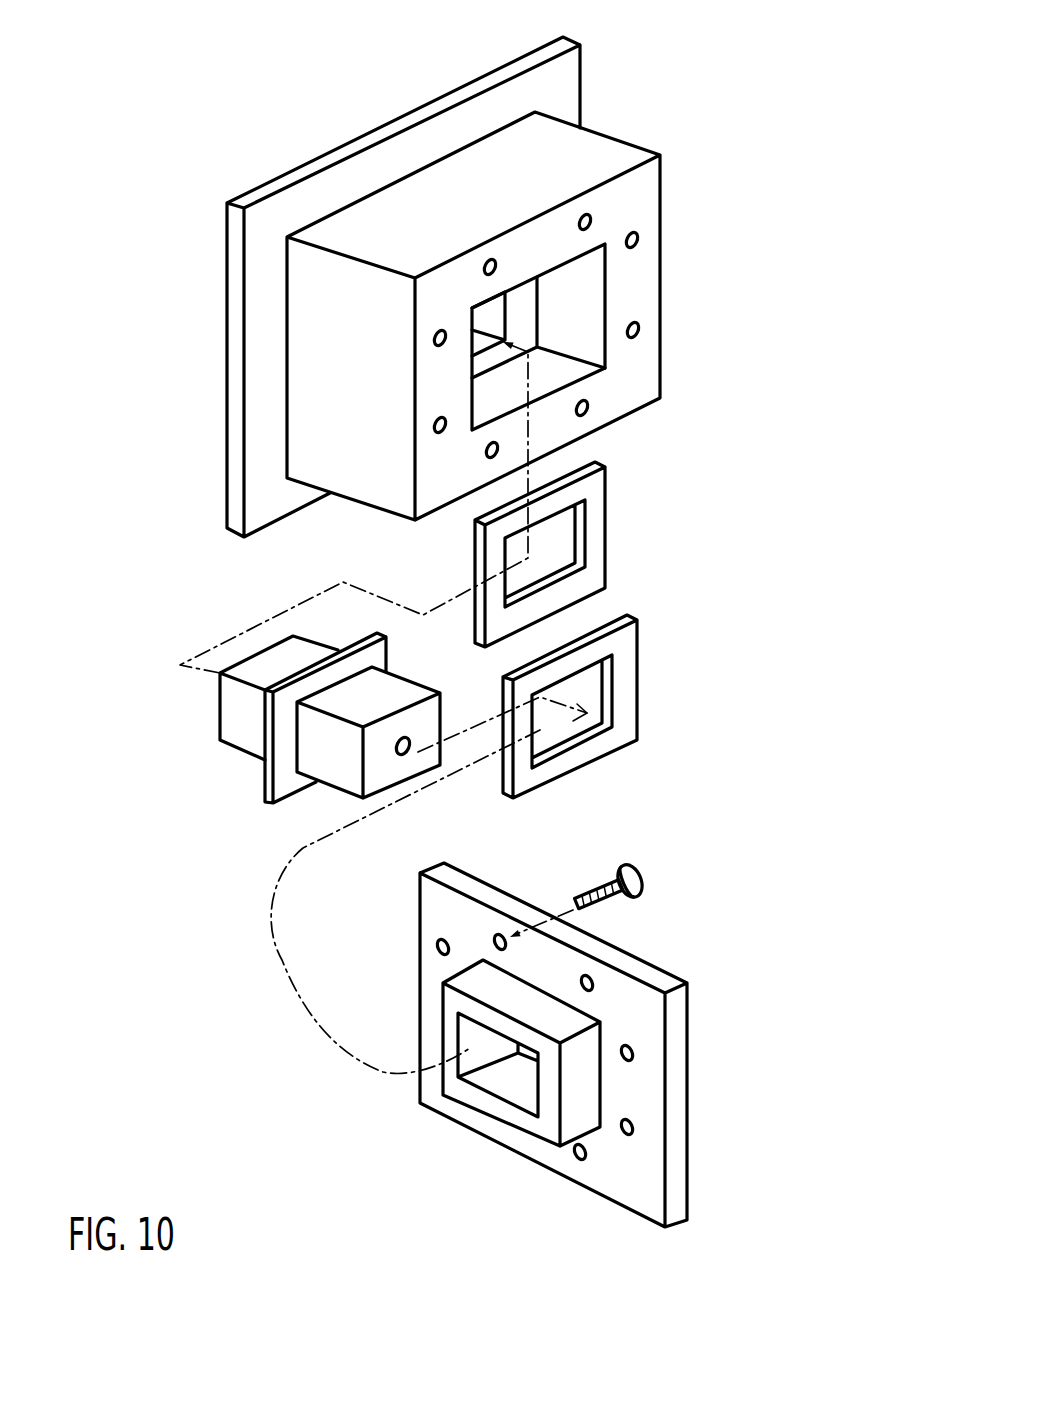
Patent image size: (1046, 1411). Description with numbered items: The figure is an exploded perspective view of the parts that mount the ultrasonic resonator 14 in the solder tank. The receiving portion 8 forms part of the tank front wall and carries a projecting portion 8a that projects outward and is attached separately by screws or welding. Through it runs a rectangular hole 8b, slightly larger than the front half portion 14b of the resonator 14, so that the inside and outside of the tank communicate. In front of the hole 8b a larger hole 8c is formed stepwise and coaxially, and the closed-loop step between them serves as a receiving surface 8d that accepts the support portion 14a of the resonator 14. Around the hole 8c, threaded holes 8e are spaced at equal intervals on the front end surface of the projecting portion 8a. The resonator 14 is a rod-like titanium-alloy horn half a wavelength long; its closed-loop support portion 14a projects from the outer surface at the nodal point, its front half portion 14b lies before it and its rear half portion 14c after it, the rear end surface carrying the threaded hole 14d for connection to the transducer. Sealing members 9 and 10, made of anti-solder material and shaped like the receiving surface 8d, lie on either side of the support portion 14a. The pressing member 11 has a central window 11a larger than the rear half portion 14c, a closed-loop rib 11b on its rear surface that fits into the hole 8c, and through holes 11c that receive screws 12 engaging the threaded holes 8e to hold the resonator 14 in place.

The receiving portion 8 is at (590, 79).
The projecting portion 8a is at (605, 137).
The hole 8b is at (503, 313).
The hole 8c is at (577, 370).
The receiving surface 8d is at (528, 327).
The threaded holes 8e is at (638, 235).
The sealing member 9 is at (600, 525).
The sealing member 10 is at (628, 643).
The pressing member 11 is at (662, 968).
The window 11a is at (527, 1056).
The rib 11b is at (418, 1103).
The through holes 11c is at (632, 1053).
The screw 12 is at (643, 875).
The resonator 14 is at (212, 657).
The support portion 14a is at (268, 806).
The front half portion 14b is at (223, 746).
The rear half portion 14c is at (338, 790).
The threaded hole 14d is at (405, 738).